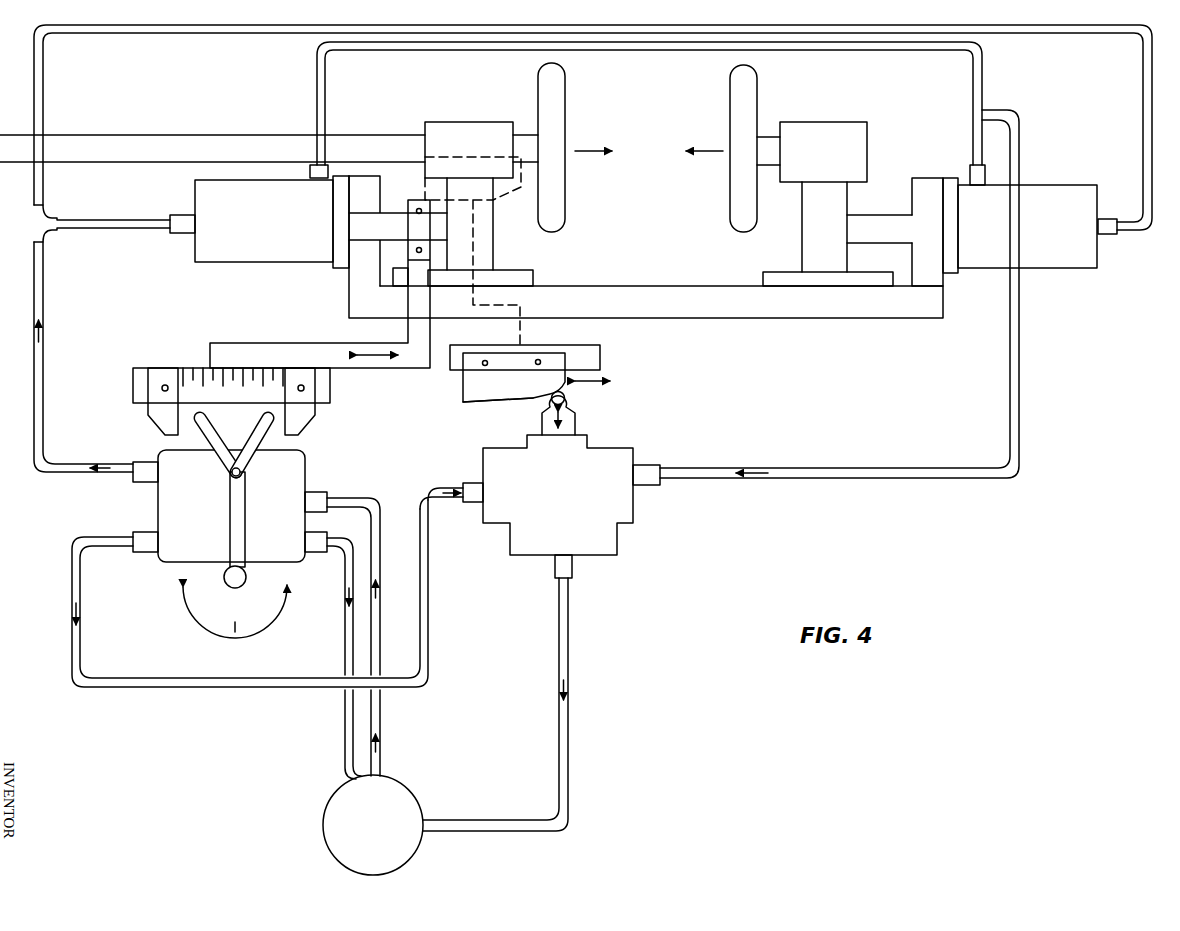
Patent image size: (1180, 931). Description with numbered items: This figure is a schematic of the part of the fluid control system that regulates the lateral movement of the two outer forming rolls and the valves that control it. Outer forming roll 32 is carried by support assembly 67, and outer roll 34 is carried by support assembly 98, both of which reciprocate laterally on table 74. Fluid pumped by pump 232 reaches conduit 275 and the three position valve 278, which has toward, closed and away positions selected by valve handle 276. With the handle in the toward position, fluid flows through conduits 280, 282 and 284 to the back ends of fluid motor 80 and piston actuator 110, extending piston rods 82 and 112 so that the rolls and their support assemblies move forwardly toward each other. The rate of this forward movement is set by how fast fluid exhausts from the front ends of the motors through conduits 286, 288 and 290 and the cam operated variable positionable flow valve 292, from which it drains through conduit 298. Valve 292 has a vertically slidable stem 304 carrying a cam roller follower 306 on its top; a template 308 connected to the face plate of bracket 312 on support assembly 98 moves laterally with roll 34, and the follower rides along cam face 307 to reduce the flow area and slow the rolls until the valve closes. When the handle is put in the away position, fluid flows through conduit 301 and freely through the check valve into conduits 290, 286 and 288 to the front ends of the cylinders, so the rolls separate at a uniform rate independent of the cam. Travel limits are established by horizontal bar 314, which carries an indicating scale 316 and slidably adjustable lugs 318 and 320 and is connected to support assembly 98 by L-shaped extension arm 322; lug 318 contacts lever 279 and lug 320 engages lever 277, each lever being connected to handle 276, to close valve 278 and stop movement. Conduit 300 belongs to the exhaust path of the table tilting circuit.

The conduit 282 is at (232, 36).
The conduit 288 is at (323, 98).
The conduit 286 is at (972, 146).
The conduit 290 is at (1020, 163).
The conduit 284 is at (107, 231).
The conduit 280 is at (44, 373).
The piston actuator 110 is at (276, 213).
The piston rod 112 is at (393, 236).
The table 74 is at (693, 313).
The outer roll 34 is at (560, 128).
The support assembly 98 is at (506, 242).
The outer forming roll 32 is at (742, 115).
The support assembly 67 is at (789, 229).
The piston rod 82 is at (905, 240).
The fluid motor 80 is at (1068, 220).
The L-shaped extension arm 322 is at (312, 351).
The horizontal bar 314 is at (143, 375).
The indicating scale 316 is at (200, 371).
The lug 318 is at (166, 418).
The lug 320 is at (305, 418).
The bracket 312 is at (459, 349).
The template 308 is at (532, 390).
The cam face 307 is at (511, 404).
The cam roller follower 306 is at (571, 399).
The stem 304 is at (576, 424).
The variable positionable flow valve 292 is at (583, 486).
The three position valve 278 is at (295, 535).
The lever 279 is at (222, 449).
The lever 277 is at (256, 442).
The valve handle 276 is at (231, 529).
The conduit 301 is at (150, 690).
The conduit 275 is at (378, 508).
The conduit 300 is at (345, 627).
The pump 232 is at (330, 803).
The conduit 298 is at (570, 649).